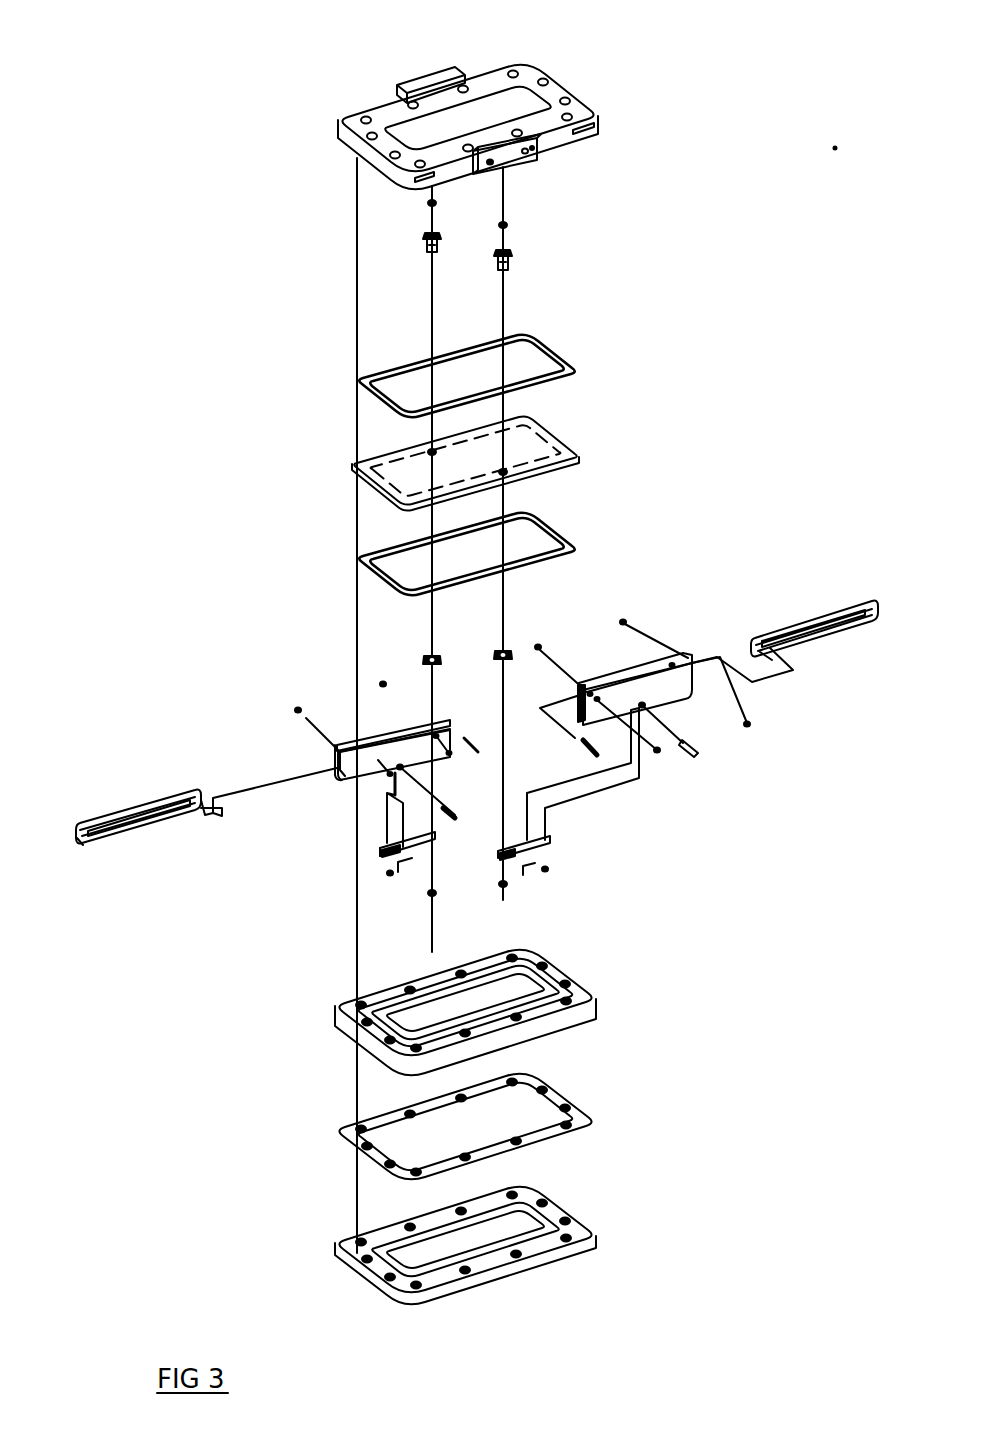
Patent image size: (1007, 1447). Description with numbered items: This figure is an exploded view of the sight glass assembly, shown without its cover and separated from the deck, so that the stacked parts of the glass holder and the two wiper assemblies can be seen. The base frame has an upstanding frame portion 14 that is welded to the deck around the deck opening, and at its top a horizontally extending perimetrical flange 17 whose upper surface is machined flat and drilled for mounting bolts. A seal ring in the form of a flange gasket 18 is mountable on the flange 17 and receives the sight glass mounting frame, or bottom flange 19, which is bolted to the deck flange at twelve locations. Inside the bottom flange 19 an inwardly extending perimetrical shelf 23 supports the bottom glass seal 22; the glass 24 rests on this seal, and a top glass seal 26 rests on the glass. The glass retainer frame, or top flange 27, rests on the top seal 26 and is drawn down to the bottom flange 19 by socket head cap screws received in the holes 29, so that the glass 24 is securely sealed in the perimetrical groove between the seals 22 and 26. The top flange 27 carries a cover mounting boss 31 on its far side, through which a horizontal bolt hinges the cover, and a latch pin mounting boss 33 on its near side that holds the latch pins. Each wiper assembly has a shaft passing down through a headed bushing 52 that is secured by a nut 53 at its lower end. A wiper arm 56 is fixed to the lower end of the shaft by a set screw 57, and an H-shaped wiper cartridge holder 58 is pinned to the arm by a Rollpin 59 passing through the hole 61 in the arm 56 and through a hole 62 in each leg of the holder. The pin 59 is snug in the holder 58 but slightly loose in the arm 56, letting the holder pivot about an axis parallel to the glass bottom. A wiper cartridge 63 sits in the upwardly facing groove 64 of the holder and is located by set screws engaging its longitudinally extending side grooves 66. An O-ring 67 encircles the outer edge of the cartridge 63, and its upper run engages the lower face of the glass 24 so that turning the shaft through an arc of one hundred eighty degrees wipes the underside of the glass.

The frame portion 14 is at (540, 1217).
The perimetrical flange 17 is at (498, 1271).
The flange gasket 18 is at (567, 1099).
The bottom flange 19 is at (580, 1017).
The bottom glass seal 22 is at (565, 531).
The perimetrical shelf 23 is at (583, 987).
The glass 24 is at (540, 454).
The top glass seal 26 is at (560, 349).
The top flange 27 is at (600, 132).
The holes 29 is at (553, 954).
The cover mounting boss 31 is at (430, 82).
The latch pin mounting boss 33 is at (520, 160).
The headed bushing 52 is at (425, 240).
The nut 53 is at (425, 657).
The wiper arm 56 is at (435, 842).
The set screw 57 is at (388, 873).
The wiper cartridge holder 58 is at (350, 776).
The Rollpin 59 is at (443, 810).
The hole 61 is at (548, 850).
The hole 62 is at (400, 767).
The wiper cartridge 63 is at (82, 842).
The groove 64 is at (368, 740).
The side grooves 66 is at (178, 800).
The O-ring 67 is at (140, 800).